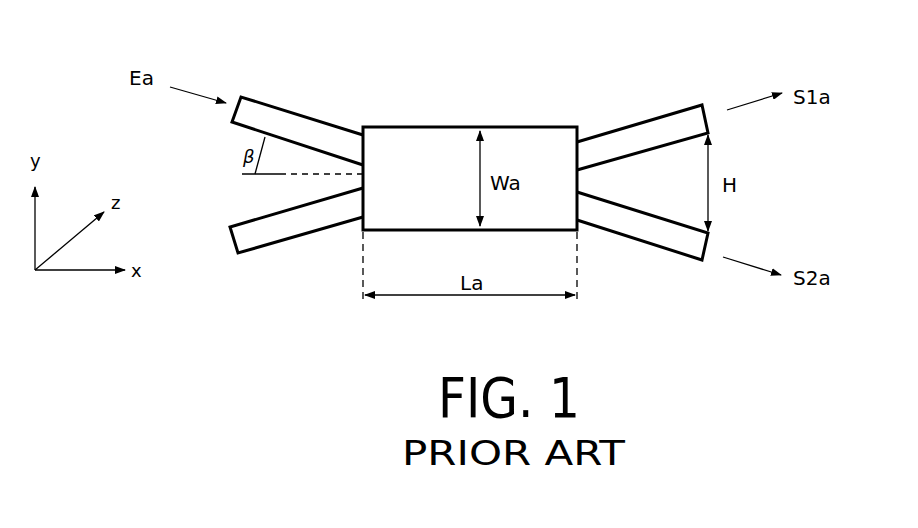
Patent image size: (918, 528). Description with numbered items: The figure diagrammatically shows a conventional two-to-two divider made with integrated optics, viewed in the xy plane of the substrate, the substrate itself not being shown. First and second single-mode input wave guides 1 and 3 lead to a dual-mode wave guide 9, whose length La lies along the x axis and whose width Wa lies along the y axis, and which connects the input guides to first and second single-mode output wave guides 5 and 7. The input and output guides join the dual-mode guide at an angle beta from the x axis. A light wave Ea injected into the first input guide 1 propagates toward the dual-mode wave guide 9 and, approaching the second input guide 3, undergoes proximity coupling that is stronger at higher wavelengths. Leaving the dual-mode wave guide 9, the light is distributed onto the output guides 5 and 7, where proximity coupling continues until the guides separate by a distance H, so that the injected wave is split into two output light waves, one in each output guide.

The first single-mode input wave guide 1 is at (302, 123).
The second single-mode input wave guide 3 is at (285, 230).
The first single-mode output wave guide 5 is at (672, 127).
The second single-mode output wave guide 7 is at (663, 238).
The dual-mode wave guide 9 is at (455, 133).